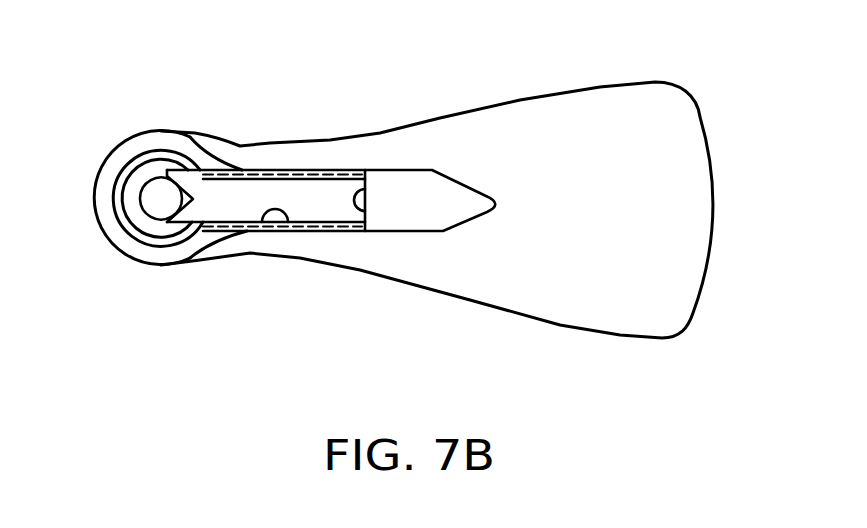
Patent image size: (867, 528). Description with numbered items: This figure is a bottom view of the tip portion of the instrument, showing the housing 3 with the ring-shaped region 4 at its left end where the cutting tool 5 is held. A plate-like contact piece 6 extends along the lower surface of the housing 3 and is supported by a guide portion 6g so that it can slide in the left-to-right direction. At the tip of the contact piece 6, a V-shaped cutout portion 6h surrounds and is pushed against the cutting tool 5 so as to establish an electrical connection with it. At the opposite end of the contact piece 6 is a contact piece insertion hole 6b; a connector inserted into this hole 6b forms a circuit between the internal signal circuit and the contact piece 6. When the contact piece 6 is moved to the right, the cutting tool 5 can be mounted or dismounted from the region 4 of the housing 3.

The housing 3 is at (677, 222).
The ring portion 4 is at (120, 150).
The cutting tool 5 is at (148, 199).
The contact piece 6 is at (240, 193).
The contact piece insertion hole 6b is at (365, 171).
The guide portion 6g is at (283, 220).
The V-shaped cutout portion 6h is at (190, 222).